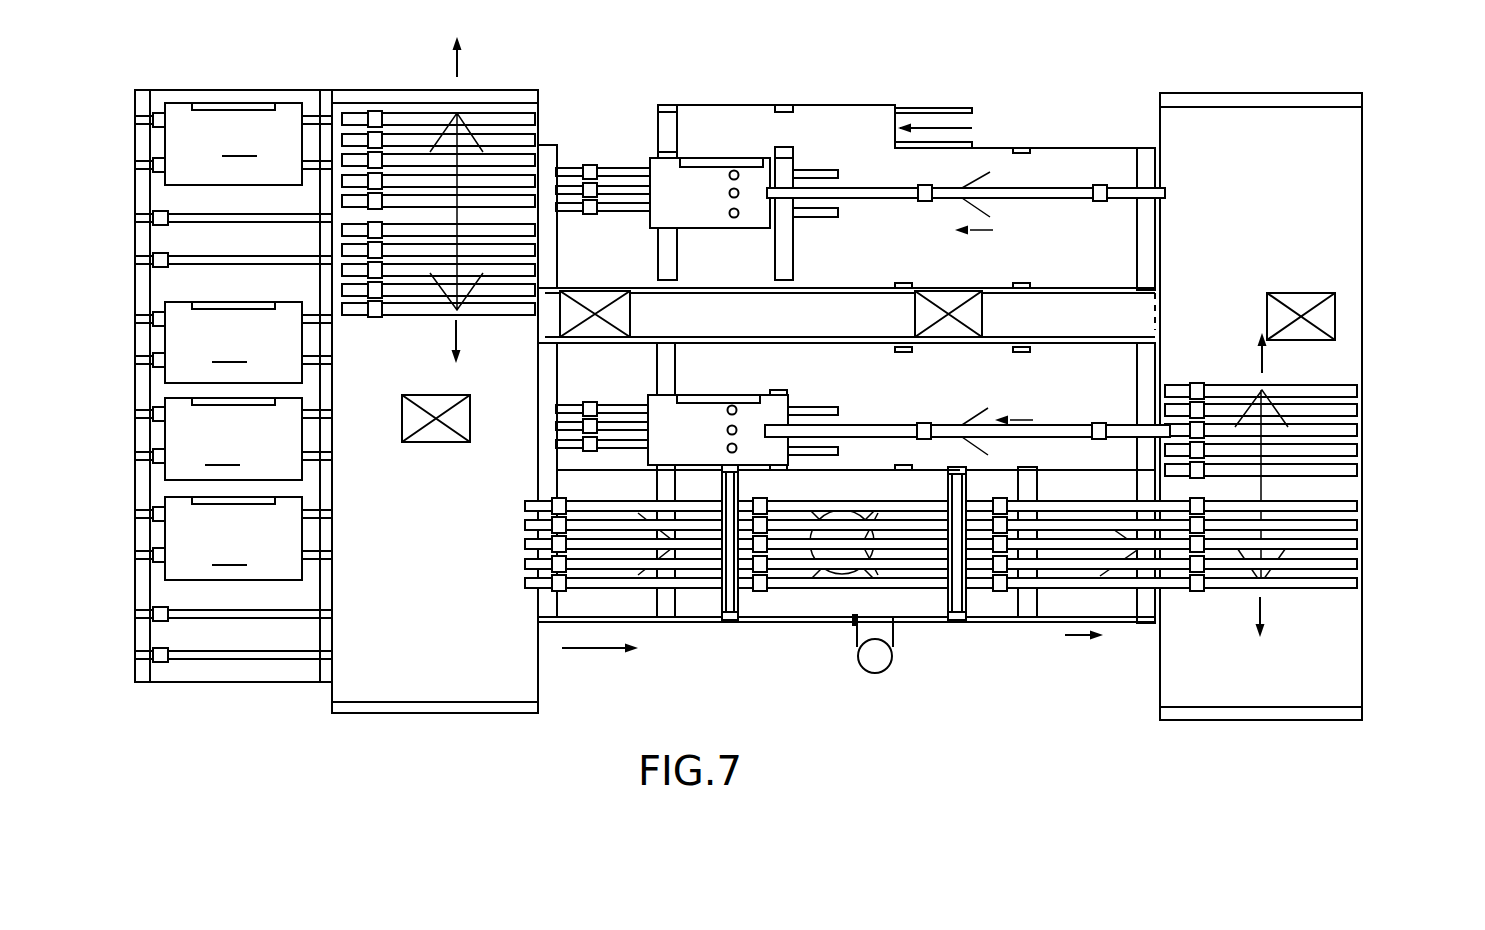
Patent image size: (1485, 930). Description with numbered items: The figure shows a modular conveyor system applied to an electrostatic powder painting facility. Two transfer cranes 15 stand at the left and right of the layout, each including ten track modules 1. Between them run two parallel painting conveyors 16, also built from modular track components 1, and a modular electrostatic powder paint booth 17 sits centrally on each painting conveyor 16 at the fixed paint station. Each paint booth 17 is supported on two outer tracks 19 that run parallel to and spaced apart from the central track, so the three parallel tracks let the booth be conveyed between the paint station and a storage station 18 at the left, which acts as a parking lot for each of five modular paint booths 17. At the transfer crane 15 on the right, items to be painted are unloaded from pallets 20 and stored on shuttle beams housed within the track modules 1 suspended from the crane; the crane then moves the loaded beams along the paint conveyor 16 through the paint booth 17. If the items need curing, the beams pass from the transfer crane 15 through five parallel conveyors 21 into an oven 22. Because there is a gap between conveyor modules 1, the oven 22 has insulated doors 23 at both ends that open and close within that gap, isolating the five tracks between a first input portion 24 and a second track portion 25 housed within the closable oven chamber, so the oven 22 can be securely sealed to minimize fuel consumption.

The track module 1 is at (1358, 583).
The transfer crane 15 is at (499, 92).
The painting conveyor 16 is at (1038, 172).
The modular electrostatic powder paint booth 17 is at (728, 157).
The storage station 18 is at (181, 726).
The outer track 19 is at (622, 160).
The pallet 20 is at (438, 445).
The parallel conveyor 21 is at (525, 583).
The oven 22 is at (837, 615).
The insulated door 23 is at (733, 620).
The first input portion 24 is at (627, 590).
The second track portion 25 is at (910, 592).